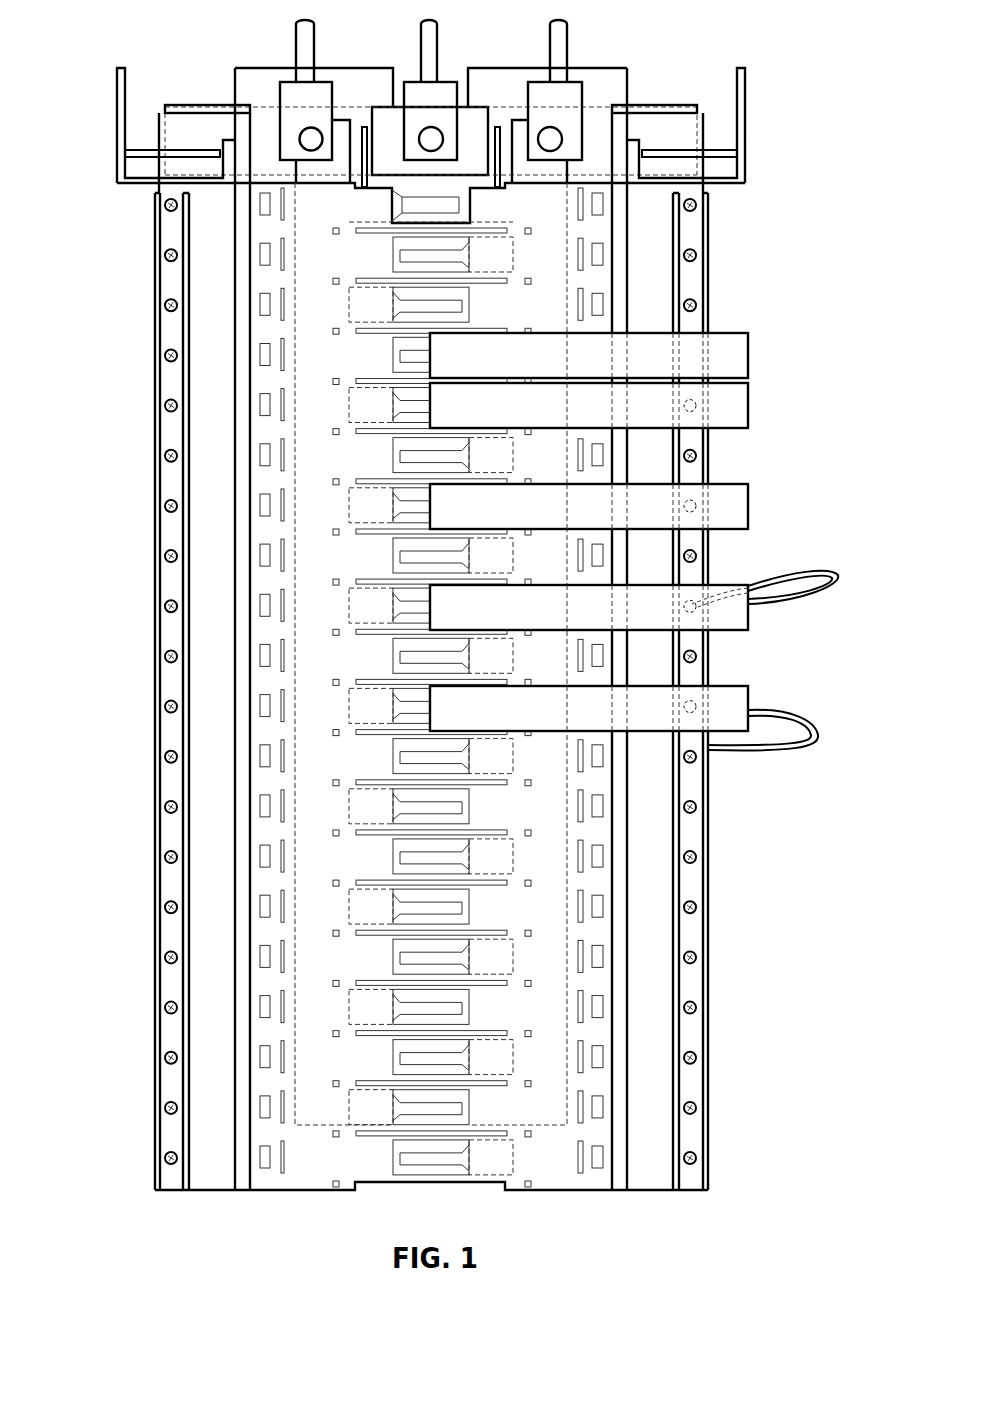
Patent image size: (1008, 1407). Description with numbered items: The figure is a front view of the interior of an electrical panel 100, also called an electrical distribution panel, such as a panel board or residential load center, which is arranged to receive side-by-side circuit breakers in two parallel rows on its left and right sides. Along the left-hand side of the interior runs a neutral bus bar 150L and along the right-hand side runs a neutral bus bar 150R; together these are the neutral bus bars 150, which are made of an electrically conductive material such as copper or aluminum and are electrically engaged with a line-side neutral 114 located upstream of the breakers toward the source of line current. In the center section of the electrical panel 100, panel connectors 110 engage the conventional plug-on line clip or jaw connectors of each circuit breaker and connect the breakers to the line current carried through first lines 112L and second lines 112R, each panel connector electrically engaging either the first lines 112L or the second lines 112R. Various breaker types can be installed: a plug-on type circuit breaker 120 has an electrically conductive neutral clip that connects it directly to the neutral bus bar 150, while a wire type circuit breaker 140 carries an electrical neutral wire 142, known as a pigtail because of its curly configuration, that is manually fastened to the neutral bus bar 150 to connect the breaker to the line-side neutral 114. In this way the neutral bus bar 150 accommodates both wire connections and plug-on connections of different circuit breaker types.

The electrical panel 100 is at (141, 1219).
The panel connectors 110 is at (398, 1010).
The first lines 112L is at (295, 58).
The second lines 112R is at (548, 58).
The line-side neutral 114 is at (419, 58).
The plug-on type circuit breaker 120 is at (750, 505).
The wire type circuit breaker 140 is at (720, 583).
The electrical neutral wire 142 is at (792, 712).
The neutral bus bars 150 is at (111, 565).
The left neutral bus bar 150L is at (165, 113).
The right neutral bus bar 150R is at (697, 113).